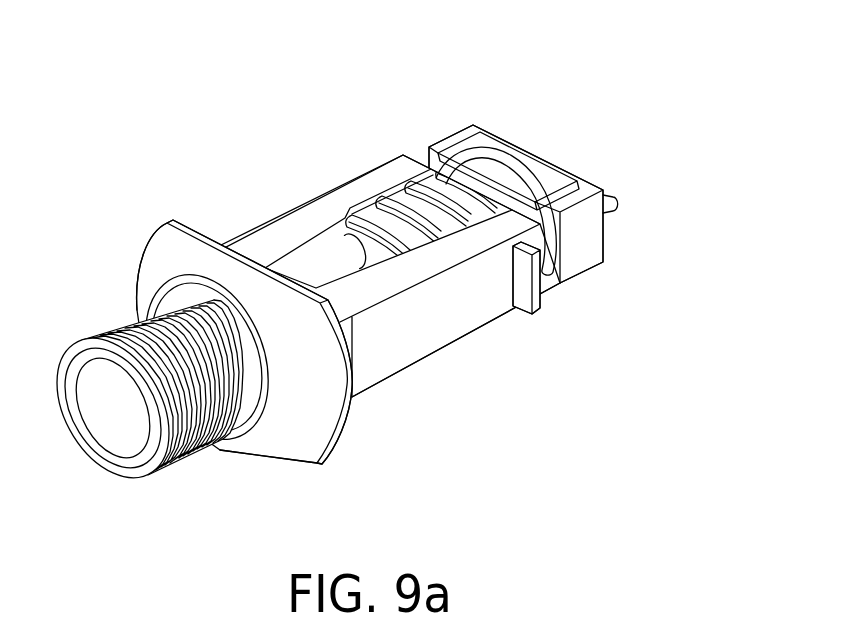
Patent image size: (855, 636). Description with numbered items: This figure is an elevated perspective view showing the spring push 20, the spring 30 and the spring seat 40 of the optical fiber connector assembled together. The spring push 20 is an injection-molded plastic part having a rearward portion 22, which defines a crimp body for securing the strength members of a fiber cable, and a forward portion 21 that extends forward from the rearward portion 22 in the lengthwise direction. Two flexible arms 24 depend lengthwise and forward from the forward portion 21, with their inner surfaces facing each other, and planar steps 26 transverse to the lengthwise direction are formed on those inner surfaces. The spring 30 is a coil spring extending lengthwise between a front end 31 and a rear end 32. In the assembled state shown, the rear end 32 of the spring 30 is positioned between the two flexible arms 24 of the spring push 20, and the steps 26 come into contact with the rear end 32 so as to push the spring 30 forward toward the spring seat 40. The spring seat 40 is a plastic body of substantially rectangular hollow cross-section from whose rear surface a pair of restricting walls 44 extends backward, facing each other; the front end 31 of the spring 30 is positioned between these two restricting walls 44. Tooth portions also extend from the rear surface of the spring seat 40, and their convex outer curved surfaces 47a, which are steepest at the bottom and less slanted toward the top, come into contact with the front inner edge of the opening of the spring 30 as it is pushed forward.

The spring push 20 is at (390, 299).
The forward portion 21 is at (327, 403).
The rearward portion 22 is at (95, 457).
The flexible arms 24 is at (433, 261).
The steps 26 is at (339, 240).
The spring 30 is at (387, 208).
The front end 31 is at (487, 170).
The rear end 32 is at (382, 240).
The spring seat 40 is at (576, 158).
The restricting walls 44 is at (557, 268).
The curved surfaces 47a is at (513, 165).